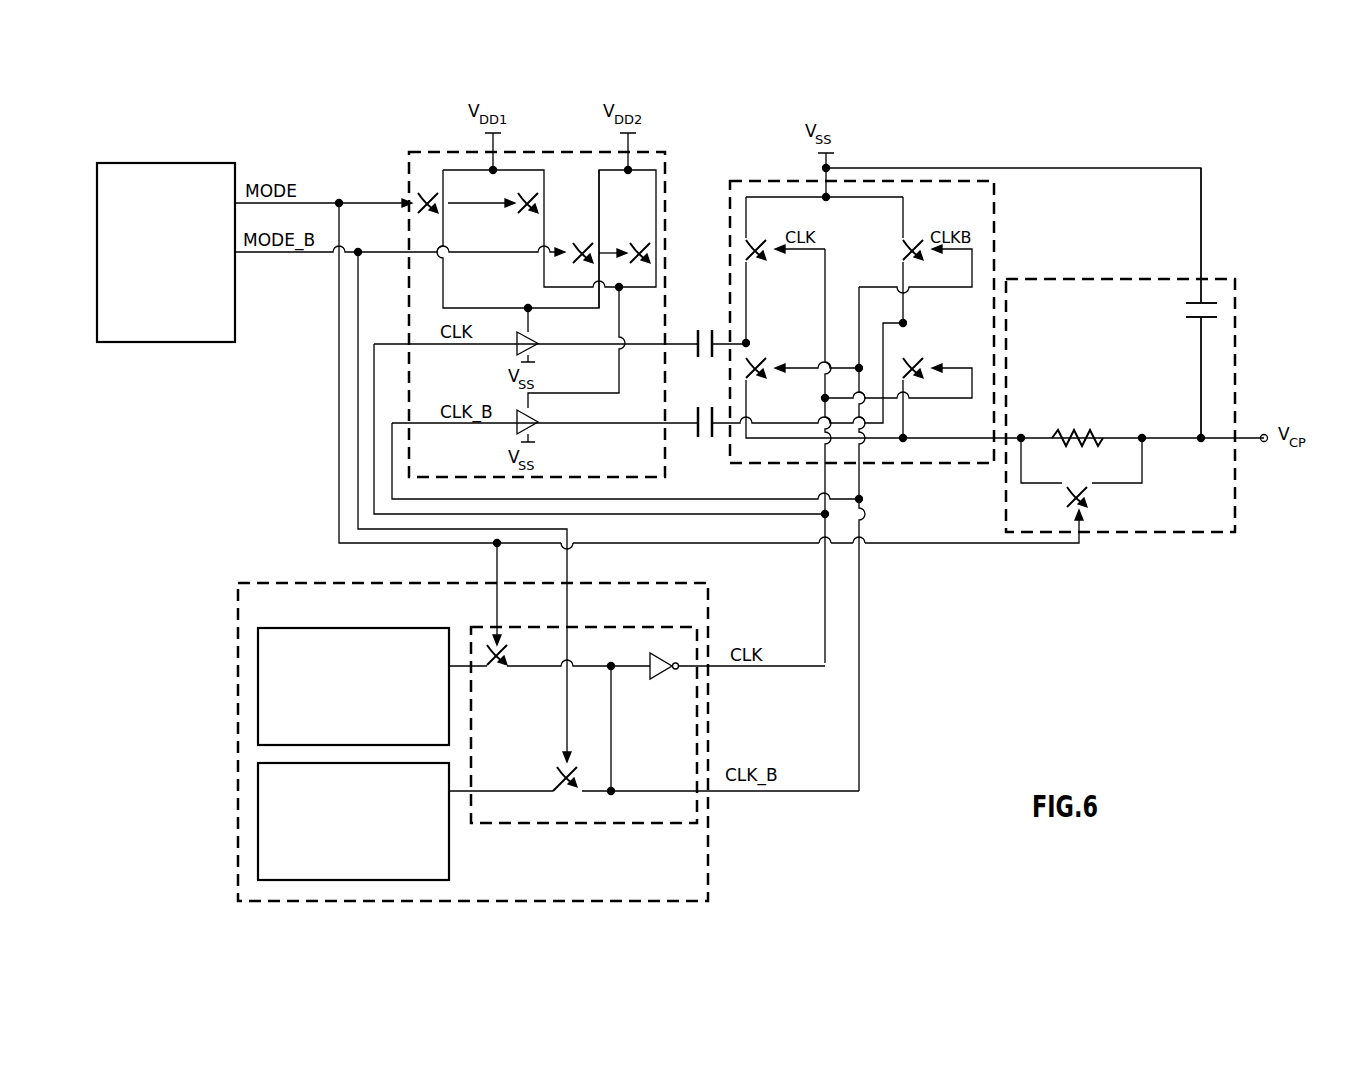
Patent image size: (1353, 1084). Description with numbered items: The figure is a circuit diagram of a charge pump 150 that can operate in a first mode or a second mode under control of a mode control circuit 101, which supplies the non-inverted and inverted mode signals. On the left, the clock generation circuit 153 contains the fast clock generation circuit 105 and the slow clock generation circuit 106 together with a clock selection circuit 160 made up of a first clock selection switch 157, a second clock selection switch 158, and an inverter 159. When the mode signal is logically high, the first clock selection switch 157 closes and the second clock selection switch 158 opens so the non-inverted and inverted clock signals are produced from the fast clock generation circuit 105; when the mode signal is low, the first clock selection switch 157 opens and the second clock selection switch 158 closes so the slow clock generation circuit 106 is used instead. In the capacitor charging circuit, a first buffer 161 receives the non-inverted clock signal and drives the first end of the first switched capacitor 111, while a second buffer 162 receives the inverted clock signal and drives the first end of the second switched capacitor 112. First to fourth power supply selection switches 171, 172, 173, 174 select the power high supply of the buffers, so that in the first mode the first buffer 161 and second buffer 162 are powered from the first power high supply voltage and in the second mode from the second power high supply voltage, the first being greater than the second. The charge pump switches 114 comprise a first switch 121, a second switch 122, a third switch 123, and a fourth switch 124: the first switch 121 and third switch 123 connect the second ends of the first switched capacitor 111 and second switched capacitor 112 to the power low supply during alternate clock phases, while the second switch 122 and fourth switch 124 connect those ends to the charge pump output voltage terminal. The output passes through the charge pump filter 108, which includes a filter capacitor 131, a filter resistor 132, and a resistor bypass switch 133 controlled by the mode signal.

The mode control circuit 101 is at (137, 342).
The fast clock generation circuit 105 is at (419, 628).
The slow clock generation circuit 106 is at (449, 843).
The charge pump filter 108 is at (1236, 305).
The first switched capacitor 111 is at (696, 333).
The second switched capacitor 112 is at (696, 412).
The charge pump switches 114 is at (776, 181).
The first switch 121 is at (754, 240).
The second switch 122 is at (756, 358).
The third switch 123 is at (912, 240).
The fourth switch 124 is at (912, 358).
The filter capacitor 131 is at (1192, 318).
The filter resistor 132 is at (1098, 432).
The resistor bypass switch 133 is at (1090, 497).
The charge pump 150 is at (1232, 142).
The clock generation circuit 153 is at (708, 608).
The first clock selection switch 157 is at (494, 672).
The second clock selection switch 158 is at (553, 772).
The inverter 159 is at (664, 678).
The clock selection block 160 is at (622, 627).
The first buffer 161 is at (537, 339).
The second buffer 162 is at (537, 418).
The first power supply selection switch 171 is at (444, 196).
The second power supply selection switch 172 is at (578, 243).
The third power supply selection switch 173 is at (522, 222).
The fourth power supply selection switch 174 is at (636, 243).